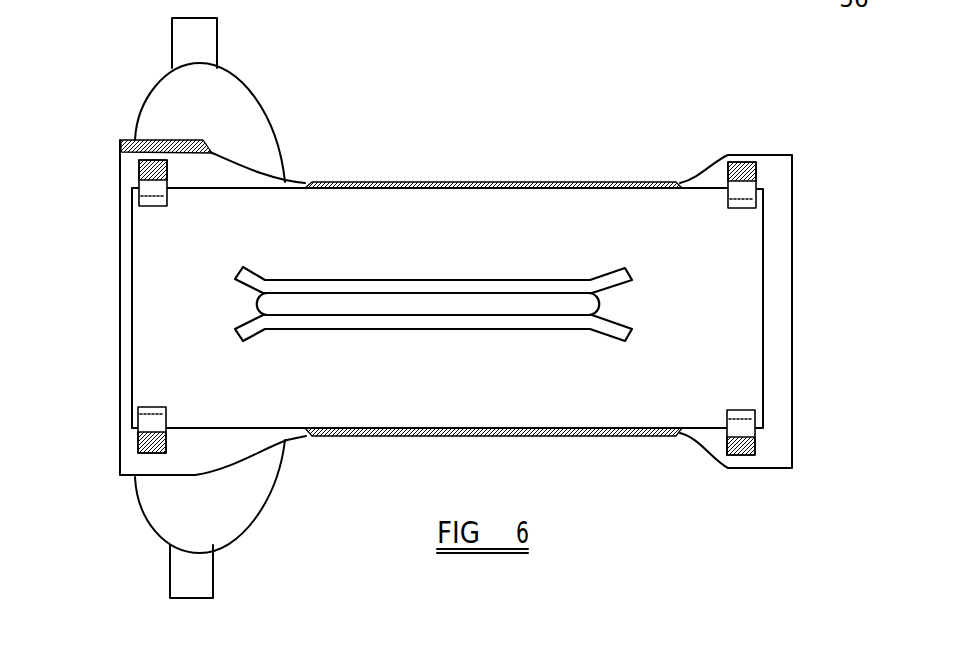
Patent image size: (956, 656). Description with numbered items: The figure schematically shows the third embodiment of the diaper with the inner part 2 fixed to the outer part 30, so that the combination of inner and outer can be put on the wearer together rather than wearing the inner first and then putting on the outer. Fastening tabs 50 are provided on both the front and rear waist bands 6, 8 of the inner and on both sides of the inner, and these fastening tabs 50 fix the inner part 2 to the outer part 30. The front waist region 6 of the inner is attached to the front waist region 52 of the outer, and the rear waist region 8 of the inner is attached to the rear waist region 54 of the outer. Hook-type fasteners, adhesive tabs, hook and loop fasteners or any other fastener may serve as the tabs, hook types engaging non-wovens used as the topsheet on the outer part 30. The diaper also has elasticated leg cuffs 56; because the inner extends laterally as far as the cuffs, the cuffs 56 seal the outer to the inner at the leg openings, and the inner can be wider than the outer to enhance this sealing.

The inner part 2 is at (713, 286).
The front waist region 6 is at (145, 285).
The rear waist region 8 is at (712, 347).
The outer part 30 is at (299, 181).
The fastening tabs 50 is at (138, 436).
The front waist region 52 is at (120, 212).
The rear waist region 54 is at (783, 237).
The elasticated leg cuffs 56 is at (540, 437).